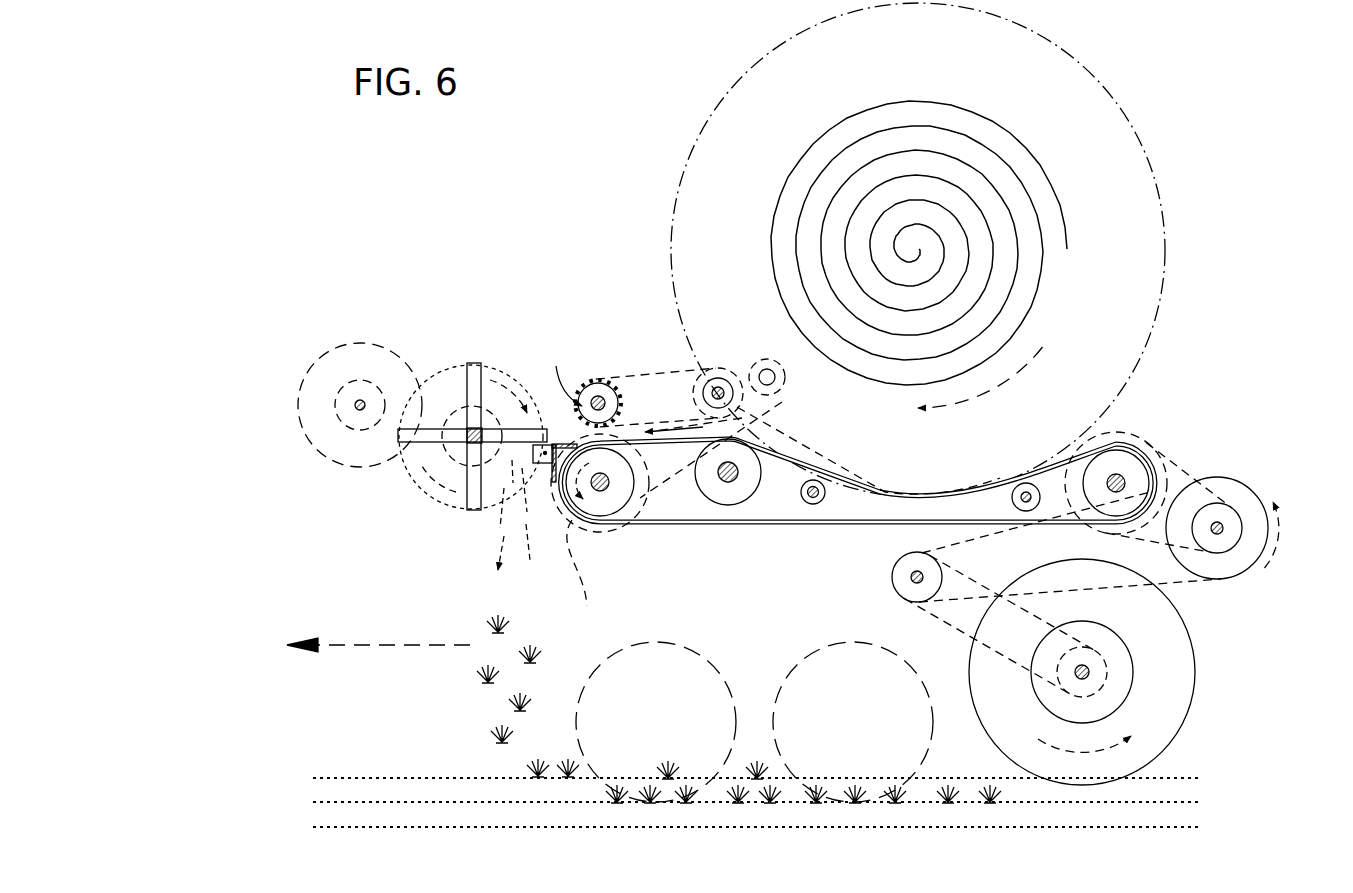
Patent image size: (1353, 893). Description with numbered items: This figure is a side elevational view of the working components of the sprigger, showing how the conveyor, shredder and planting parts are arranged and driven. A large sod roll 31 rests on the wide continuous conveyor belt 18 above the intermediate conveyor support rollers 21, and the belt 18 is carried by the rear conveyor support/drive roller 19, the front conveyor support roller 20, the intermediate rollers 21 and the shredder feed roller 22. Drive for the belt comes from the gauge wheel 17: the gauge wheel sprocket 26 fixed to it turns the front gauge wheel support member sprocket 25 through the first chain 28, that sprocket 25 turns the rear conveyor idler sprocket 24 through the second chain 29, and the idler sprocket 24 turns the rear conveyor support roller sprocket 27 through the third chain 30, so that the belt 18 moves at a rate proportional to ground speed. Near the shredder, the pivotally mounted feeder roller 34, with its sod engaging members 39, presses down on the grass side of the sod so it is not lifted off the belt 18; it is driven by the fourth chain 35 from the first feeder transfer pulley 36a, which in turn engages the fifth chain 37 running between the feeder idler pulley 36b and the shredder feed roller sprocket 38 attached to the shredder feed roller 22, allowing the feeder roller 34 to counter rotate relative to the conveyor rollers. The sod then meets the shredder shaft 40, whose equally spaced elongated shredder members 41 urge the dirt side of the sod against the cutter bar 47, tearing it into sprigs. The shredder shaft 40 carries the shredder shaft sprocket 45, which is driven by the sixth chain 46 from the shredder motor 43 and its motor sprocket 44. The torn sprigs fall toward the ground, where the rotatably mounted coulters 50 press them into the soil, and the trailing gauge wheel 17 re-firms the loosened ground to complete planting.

The gauge wheel 17 is at (1171, 726).
The conveyor belt 18 is at (778, 523).
The rear conveyor support/drive roller 19 is at (1117, 458).
The front conveyor support roller 20 is at (738, 498).
The intermediate conveyor support rollers 21 is at (831, 497).
The shredder feed roller 22 is at (604, 500).
The rear conveyor idler sprocket 24 is at (1245, 500).
The front gauge wheel support member sprocket 25 is at (891, 598).
The gauge wheel sprocket 26 is at (1106, 670).
The rear conveyor support roller sprocket 27 is at (1152, 436).
The first chain 28 is at (960, 633).
The second chain 29 is at (1180, 580).
The third chain 30 is at (1177, 466).
The sod roll 31 is at (1120, 147).
The feeder roller 34 is at (597, 372).
The fourth chain 35 is at (637, 382).
The first feeder transfer pulley 36a is at (720, 370).
The feeder idler pulley 36b is at (784, 380).
The fifth chain 37 is at (682, 504).
The shredder feed roller sprocket 38 is at (585, 579).
The sod engaging members 39 is at (556, 371).
The shredder shaft 40 is at (463, 443).
The shredder members 41 is at (460, 370).
The shredder motor 43 is at (318, 453).
The cutter hub 44 is at (310, 375).
The shredder shaft sprocket 45 is at (450, 490).
The sixth chain 46 is at (423, 377).
The cutter bar 47 is at (545, 470).
The coulters 50 is at (783, 685).